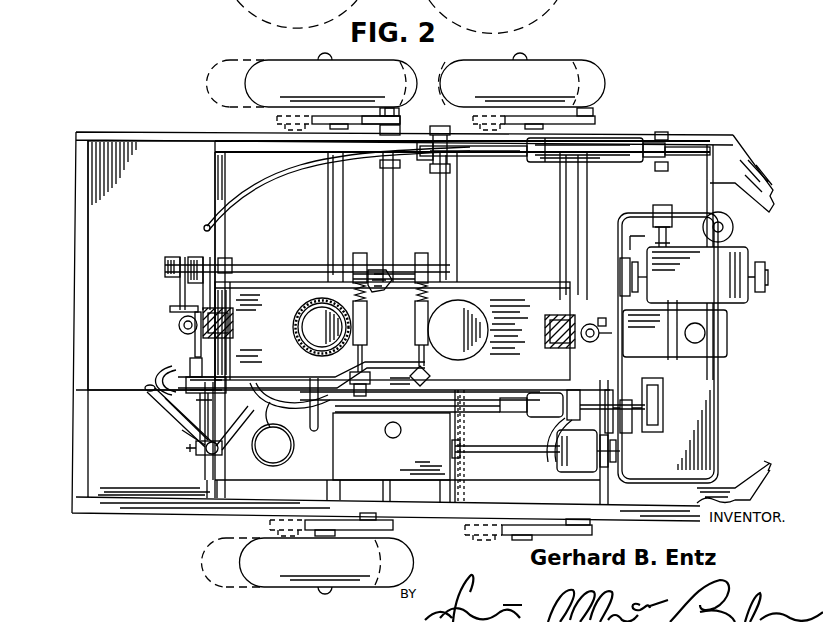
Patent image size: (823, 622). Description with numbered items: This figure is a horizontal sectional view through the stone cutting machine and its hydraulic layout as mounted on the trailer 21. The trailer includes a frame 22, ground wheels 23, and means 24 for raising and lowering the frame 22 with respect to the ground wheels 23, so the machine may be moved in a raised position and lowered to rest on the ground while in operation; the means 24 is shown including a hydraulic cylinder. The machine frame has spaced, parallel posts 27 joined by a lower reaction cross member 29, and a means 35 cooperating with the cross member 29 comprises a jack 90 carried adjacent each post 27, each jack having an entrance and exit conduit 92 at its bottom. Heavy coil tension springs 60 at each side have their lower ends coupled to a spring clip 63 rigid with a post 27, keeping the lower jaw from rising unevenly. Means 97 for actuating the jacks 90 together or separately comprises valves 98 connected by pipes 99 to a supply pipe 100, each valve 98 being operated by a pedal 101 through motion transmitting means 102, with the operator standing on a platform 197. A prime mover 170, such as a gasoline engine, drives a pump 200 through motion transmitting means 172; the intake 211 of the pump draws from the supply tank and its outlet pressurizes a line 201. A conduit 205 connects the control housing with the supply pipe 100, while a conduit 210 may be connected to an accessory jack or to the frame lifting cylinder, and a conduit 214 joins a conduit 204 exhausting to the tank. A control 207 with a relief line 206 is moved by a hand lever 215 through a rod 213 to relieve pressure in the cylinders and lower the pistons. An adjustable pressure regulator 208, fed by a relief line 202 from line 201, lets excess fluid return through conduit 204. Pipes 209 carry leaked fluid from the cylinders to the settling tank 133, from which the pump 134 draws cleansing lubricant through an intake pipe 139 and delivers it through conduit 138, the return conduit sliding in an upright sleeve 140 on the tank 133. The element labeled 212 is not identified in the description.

The trailer 21 is at (74, 513).
The frame 22 is at (134, 498).
The ground wheels 23 is at (255, 90).
The means for raising and lowering the frame 24 is at (606, 140).
The posts 27 is at (546, 332).
The lower reaction cross member 29 is at (510, 283).
The means for actuating the intermediate cross member 35 is at (504, 304).
The coil tension springs 60 is at (190, 333).
The spring clip 63 is at (179, 325).
The jack 90 is at (308, 298).
The entrance and exit conduit 92 is at (391, 329).
The means for selectively actuating the jacks 97 is at (165, 273).
The valve 98 is at (418, 330).
The pipes 99 is at (360, 352).
The supply pipe 100 is at (392, 384).
The pedal 101 is at (188, 245).
The motion transmitting means 102 is at (262, 252).
The settling tank 133 is at (268, 480).
The pump 134 is at (556, 470).
The conduit 138 is at (548, 440).
The intake pipe 139 is at (478, 453).
The upright sleeve 140 is at (314, 436).
The prime mover 170 is at (750, 306).
The motion transmitting means 172 is at (632, 372).
The platform 197 is at (100, 166).
The pump 200 is at (545, 396).
The line 201 is at (156, 397).
The relief line 202 is at (190, 440).
The conduit 204 is at (244, 430).
The conduit 205 is at (155, 380).
The relief line 206 is at (284, 450).
The control 207 is at (190, 362).
The adjustable pressure regulator 208 is at (201, 456).
The pipes 209 is at (340, 372).
The conduit 210 is at (280, 178).
The intake 211 is at (486, 408).
The pipe 212 is at (180, 424).
The rod 213 is at (233, 322).
The conduit 214 is at (182, 432).
The hand lever 215 is at (172, 306).